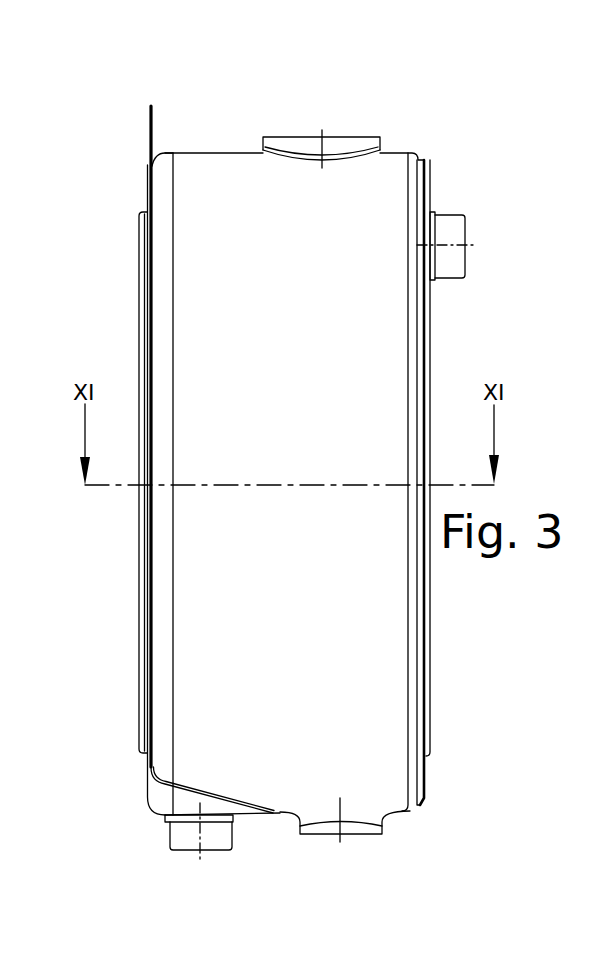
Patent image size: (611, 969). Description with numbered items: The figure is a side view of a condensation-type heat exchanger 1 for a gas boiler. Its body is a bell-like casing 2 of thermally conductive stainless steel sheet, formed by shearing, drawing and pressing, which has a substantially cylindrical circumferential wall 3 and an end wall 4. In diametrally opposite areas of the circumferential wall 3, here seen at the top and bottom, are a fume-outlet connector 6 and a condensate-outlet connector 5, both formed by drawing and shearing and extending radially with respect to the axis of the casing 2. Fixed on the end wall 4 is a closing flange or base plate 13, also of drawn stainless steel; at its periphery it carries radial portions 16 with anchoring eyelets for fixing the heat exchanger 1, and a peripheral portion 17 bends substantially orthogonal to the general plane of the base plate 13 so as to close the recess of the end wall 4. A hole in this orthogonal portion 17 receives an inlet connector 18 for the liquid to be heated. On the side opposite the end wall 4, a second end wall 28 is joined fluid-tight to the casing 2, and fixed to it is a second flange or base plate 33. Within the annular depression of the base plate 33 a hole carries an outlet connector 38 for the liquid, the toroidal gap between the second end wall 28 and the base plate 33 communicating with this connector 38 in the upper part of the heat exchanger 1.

The heat exchanger 1 is at (439, 117).
The bell-like casing 2 is at (215, 141).
The circumferential wall 3 is at (390, 332).
The end wall 4 is at (159, 160).
The condensate-outlet connector 5 is at (368, 837).
The fume-outlet connector 6 is at (345, 138).
The base plate 13 is at (125, 219).
The radial portions 16 is at (148, 127).
The peripheral portion 17 is at (227, 803).
The inlet connector 18 is at (227, 837).
The second end wall 28 is at (423, 788).
The second base plate 33 is at (428, 702).
The outlet connector 38 is at (449, 223).